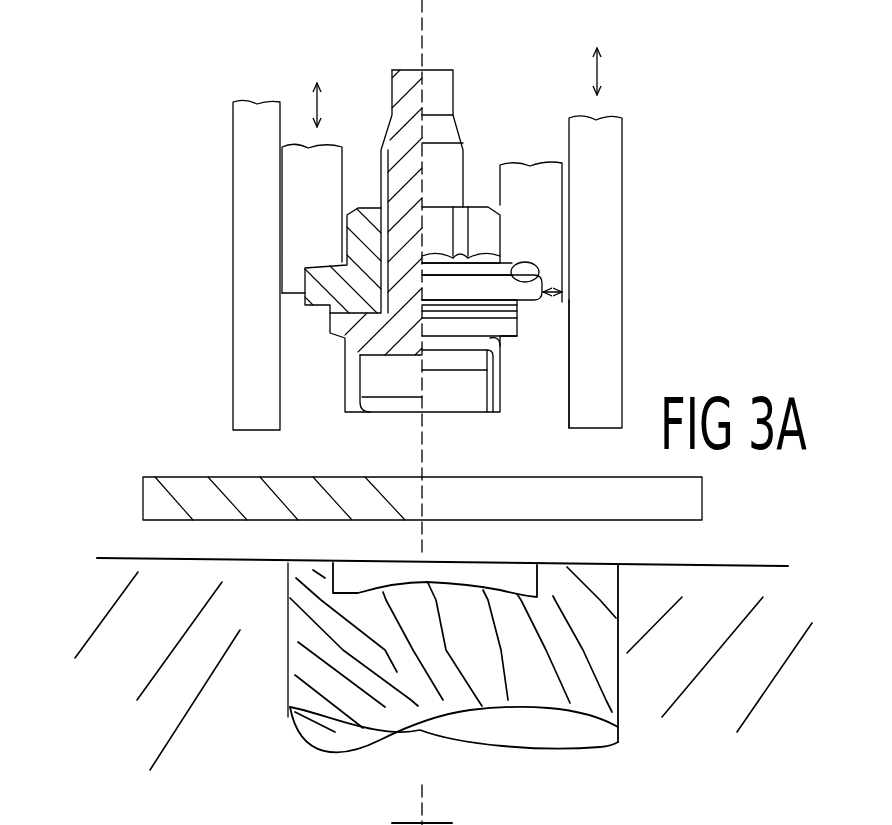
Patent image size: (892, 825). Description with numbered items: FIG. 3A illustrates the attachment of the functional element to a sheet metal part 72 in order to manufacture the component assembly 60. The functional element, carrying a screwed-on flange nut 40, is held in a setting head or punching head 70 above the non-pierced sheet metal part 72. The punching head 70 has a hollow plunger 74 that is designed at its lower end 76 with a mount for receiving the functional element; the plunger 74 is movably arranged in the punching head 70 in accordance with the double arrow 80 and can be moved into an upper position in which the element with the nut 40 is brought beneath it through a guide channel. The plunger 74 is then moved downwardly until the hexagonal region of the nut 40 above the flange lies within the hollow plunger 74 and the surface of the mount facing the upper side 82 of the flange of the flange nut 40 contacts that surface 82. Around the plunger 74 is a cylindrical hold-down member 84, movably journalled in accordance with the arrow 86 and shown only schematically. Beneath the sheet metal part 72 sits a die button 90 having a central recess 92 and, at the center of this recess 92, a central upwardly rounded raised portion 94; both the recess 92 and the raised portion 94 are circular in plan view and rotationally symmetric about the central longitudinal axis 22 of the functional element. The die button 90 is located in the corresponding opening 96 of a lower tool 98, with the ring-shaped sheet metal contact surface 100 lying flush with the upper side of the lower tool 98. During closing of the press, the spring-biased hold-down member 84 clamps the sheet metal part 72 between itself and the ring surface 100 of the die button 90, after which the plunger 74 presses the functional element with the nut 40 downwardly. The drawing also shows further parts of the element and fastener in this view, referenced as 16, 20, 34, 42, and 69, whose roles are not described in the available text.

The cup / recess 16 is at (455, 393).
The bolt 20 is at (466, 150).
The central longitudinal axis 22 is at (420, 458).
The cup wall 34 is at (375, 410).
The nut 40 is at (545, 283).
The clamping plate 42 is at (467, 175).
The component assembly 60 is at (466, 181).
The threads 69 is at (543, 300).
The punching head 70 is at (638, 167).
The sheet metal part 72 is at (680, 507).
The hollow plunger 74 is at (322, 177).
The lower end of the plunger 76 is at (295, 298).
The double arrow 80 is at (303, 110).
The upper side of the flange 82 is at (537, 268).
The hold-down member 84 is at (598, 364).
The arrow 86 is at (610, 67).
The die button 90 is at (563, 733).
The central recess 92 is at (346, 587).
The raised portion 94 is at (443, 585).
The opening of the lower tool 96 is at (626, 681).
The lower tool 98 is at (145, 640).
The sheet metal contact surface 100 is at (575, 562).